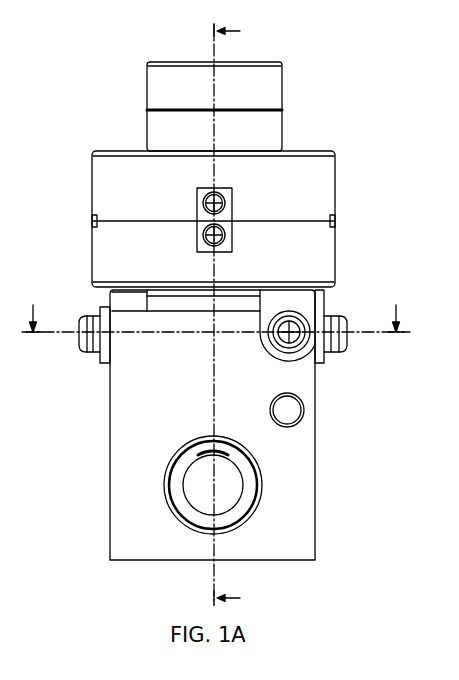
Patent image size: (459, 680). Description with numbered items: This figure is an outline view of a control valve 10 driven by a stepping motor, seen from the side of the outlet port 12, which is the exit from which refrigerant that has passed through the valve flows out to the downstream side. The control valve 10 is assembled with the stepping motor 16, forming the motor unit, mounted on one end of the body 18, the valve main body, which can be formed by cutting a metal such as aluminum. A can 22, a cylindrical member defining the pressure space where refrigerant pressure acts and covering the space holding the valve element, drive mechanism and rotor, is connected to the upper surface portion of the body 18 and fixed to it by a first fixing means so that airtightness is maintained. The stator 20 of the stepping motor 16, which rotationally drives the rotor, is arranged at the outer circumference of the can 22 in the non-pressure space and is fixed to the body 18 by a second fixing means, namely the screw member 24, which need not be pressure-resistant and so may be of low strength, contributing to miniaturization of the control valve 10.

The control valve 10 is at (216, 310).
The outlet port 12 is at (227, 493).
The stepping motor 16 is at (207, 174).
The body 18 is at (120, 489).
The stator 20 is at (108, 186).
The can 22 is at (160, 88).
The screw member 24 is at (83, 353).